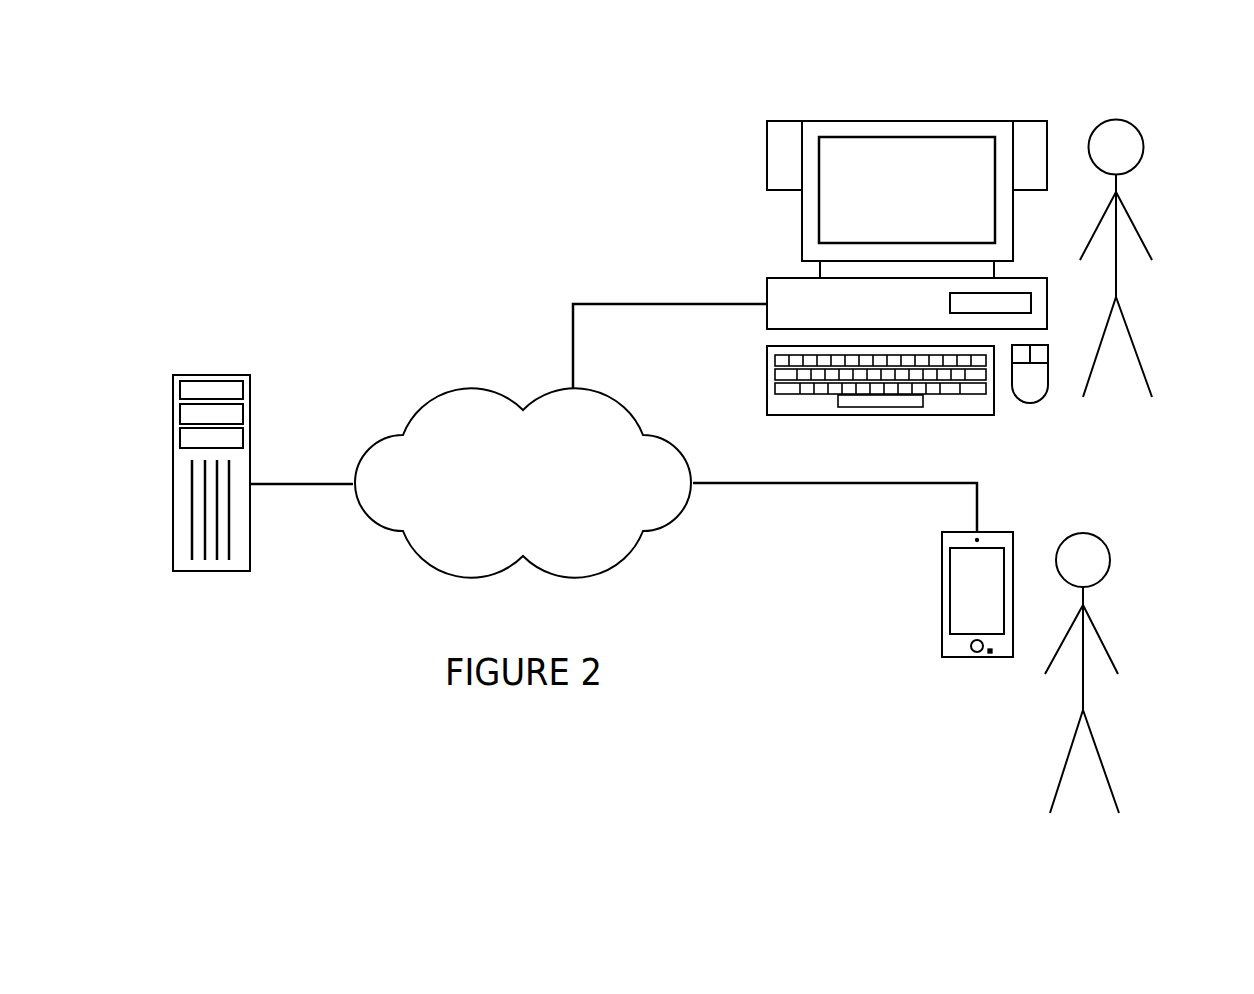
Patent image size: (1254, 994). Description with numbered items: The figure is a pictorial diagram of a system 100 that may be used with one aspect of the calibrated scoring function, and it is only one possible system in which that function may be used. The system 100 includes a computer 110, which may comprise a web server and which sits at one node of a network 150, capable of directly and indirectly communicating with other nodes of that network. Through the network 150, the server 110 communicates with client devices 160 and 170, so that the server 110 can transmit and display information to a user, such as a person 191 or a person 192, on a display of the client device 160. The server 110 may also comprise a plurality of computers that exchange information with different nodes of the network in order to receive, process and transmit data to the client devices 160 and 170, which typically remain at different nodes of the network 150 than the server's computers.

The system 100 is at (273, 97).
The computer 110 is at (173, 388).
The network 150 is at (457, 397).
The client device 160 is at (942, 556).
The client device 170 is at (908, 118).
The person 191 is at (1143, 207).
The person 192 is at (1108, 603).